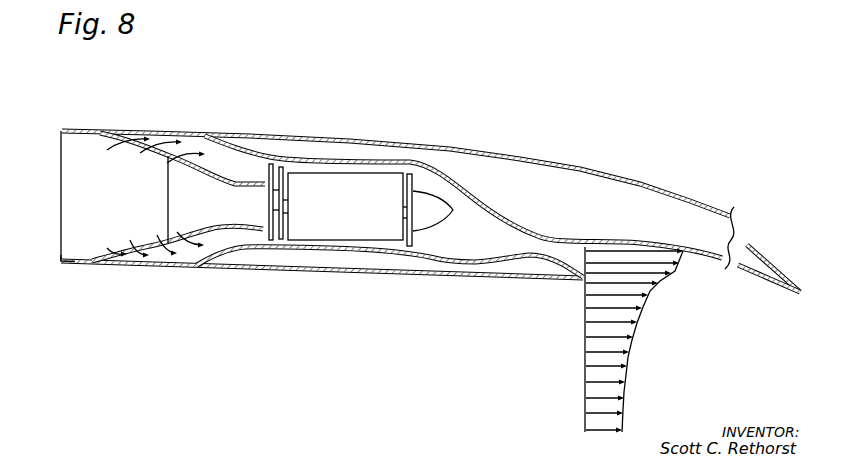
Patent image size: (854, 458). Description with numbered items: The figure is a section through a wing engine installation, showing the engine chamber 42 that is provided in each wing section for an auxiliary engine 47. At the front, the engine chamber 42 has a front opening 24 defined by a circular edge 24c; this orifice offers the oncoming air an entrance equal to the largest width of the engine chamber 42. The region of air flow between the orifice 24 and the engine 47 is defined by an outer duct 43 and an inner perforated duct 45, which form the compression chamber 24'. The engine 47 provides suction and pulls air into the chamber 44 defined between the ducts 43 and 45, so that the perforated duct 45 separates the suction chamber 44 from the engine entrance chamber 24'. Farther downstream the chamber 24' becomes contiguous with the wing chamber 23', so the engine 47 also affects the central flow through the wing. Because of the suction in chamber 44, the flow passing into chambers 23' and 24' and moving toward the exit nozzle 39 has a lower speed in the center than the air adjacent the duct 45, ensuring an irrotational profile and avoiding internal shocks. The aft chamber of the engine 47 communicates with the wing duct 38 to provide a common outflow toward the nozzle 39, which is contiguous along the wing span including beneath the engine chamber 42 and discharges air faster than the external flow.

The front opening 24 is at (375, 196).
The circular edge 24c is at (59, 262).
The compression chamber 24' is at (115, 201).
The wing chamber 23' is at (188, 200).
The engine chamber 42 is at (242, 279).
The outer duct 43 is at (247, 160).
The suction chamber 44 is at (197, 147).
The inner perforated duct 45 is at (135, 139).
The auxiliary engine 47 is at (326, 223).
The wing duct 38 is at (486, 247).
The exit nozzle 39 is at (545, 249).